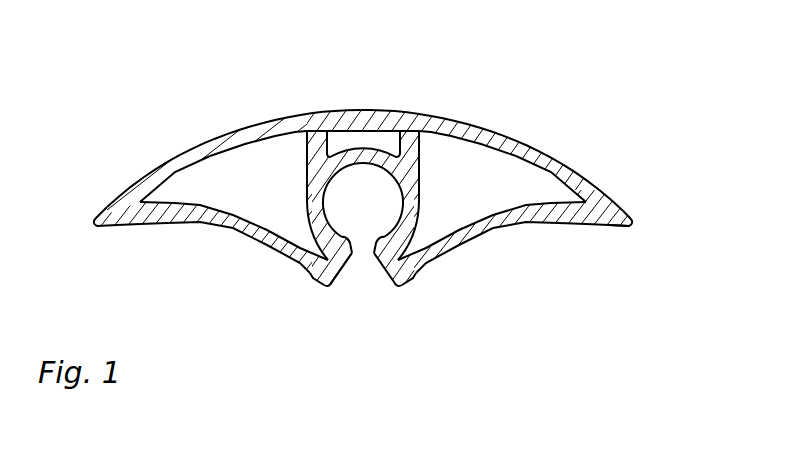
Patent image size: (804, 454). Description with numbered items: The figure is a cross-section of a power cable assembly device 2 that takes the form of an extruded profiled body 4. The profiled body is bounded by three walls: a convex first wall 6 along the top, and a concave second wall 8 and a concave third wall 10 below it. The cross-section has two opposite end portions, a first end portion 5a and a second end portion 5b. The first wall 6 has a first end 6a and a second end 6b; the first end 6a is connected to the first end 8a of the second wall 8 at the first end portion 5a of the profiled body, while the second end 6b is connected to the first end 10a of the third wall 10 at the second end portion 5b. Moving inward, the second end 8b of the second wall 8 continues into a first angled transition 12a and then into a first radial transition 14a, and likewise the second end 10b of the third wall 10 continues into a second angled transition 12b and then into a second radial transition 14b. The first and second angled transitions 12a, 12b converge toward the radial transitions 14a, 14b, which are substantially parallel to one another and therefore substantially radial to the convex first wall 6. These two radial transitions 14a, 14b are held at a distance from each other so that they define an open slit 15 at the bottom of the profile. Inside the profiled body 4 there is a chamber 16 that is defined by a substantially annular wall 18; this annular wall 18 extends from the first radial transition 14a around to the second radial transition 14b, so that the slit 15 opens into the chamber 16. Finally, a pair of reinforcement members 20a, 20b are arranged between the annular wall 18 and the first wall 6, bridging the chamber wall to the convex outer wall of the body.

The power cable assembly device 2 is at (261, 70).
The extruded profiled body 4 is at (463, 68).
The first end portion 5a is at (93, 223).
The second end portion 5b is at (633, 223).
The first wall 6 is at (545, 150).
The first end of the first wall 6a is at (120, 193).
The second end of the first wall 6b is at (617, 204).
The second wall 8 is at (197, 226).
The first end of the second wall 8a is at (133, 227).
The second end of the second wall 8b is at (311, 280).
The third wall 10 is at (513, 227).
The first end of the third wall 10a is at (608, 227).
The second end of the third wall 10b is at (417, 279).
The first angled transition 12a is at (332, 287).
The second angled transition 12b is at (394, 284).
The first radial transition 14a is at (354, 258).
The second radial transition 14b is at (367, 252).
The open slit 15 is at (374, 245).
The chamber 16 is at (377, 210).
The annular wall 18 is at (308, 196).
The first reinforcement member 20a is at (309, 150).
The second reinforcement member 20b is at (423, 150).